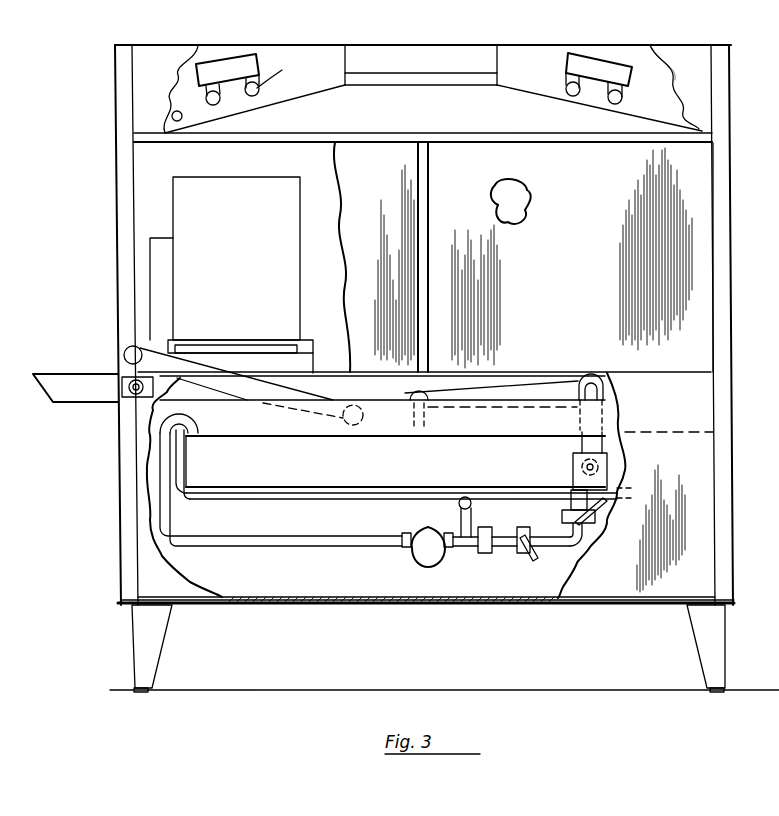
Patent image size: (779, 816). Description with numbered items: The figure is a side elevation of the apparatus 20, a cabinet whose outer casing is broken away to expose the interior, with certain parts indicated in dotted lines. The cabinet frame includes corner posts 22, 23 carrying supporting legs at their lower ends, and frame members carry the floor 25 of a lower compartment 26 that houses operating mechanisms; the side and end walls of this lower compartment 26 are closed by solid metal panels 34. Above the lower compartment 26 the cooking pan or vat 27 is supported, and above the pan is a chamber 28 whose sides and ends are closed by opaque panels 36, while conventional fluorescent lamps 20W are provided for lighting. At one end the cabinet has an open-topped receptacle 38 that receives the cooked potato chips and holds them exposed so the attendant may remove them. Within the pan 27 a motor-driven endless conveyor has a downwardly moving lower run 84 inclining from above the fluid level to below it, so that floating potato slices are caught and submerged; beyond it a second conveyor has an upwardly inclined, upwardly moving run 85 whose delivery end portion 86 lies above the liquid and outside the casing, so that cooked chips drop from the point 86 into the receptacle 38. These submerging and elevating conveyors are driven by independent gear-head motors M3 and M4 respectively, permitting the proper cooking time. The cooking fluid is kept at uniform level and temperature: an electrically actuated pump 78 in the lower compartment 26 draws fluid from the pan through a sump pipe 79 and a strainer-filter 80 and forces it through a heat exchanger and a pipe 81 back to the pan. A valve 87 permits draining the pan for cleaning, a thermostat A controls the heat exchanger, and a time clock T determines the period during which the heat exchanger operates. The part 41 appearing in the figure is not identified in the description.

The apparatus 20 is at (749, 98).
The fluorescent lamps 20W is at (219, 70).
The opaque panels 36 is at (687, 60).
The thermostat A is at (165, 119).
The corner post 22 is at (122, 178).
The corner post 23 is at (718, 192).
The control unit housing 41 is at (165, 221).
The chamber 28 is at (523, 208).
The delivery end portion 86 is at (125, 350).
The upwardly moving conveyor run 85 is at (313, 393).
The downwardly moving lower conveyor run 84 is at (535, 404).
The gear-head motor M4 is at (130, 376).
The open-topped receptacle 38 is at (84, 396).
The cooking pan 27 is at (531, 430).
The sump pipe 79 is at (365, 480).
The strainer-filter 80 is at (197, 427).
The pipe 81 is at (231, 493).
The time clock T is at (147, 487).
The pump 78 is at (423, 558).
The valve 87 is at (518, 548).
The gear-head motor M3 is at (600, 478).
The solid panels 34 is at (697, 553).
The floor 25 is at (326, 597).
The lower compartment 26 is at (520, 582).